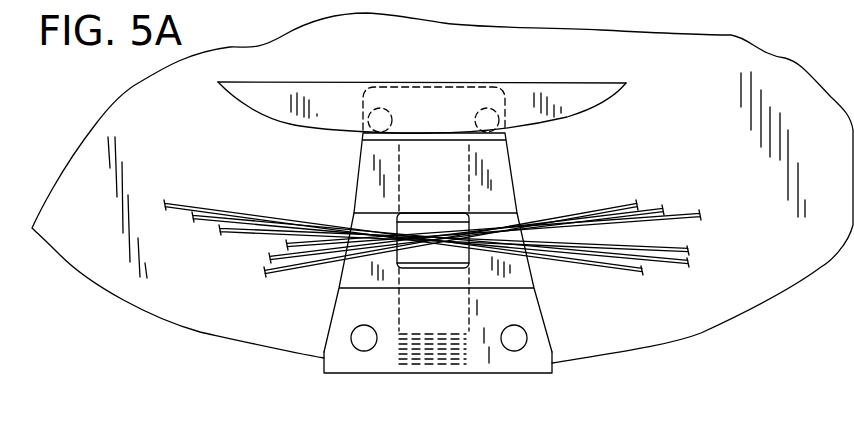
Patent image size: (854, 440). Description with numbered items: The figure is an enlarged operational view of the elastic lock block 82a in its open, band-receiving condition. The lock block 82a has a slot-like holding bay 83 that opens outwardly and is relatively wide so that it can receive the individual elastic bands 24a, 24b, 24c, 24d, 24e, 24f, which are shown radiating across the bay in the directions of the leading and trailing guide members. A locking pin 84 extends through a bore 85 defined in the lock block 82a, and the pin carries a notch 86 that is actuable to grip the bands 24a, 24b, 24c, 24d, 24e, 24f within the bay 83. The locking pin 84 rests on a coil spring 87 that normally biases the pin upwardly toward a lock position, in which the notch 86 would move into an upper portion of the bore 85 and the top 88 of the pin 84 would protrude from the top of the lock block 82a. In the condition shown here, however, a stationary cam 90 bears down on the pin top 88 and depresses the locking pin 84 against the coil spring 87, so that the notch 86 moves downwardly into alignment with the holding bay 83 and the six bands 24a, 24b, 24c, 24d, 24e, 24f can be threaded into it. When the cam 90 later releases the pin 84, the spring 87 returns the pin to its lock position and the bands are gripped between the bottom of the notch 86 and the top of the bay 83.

The lock block 82a is at (305, 362).
The holding bay 83 is at (486, 275).
The locking pin 84 is at (471, 227).
The bore 85 is at (398, 316).
The notch 86 is at (427, 229).
The coil spring 87 is at (442, 368).
The top of the pin 88 is at (440, 130).
The stationary cam 90 is at (519, 82).
The elastic band 24a is at (623, 274).
The elastic band 24b is at (673, 266).
The elastic band 24c is at (671, 243).
The elastic band 24d is at (686, 216).
The elastic band 24e is at (653, 213).
The elastic band 24f is at (606, 208).